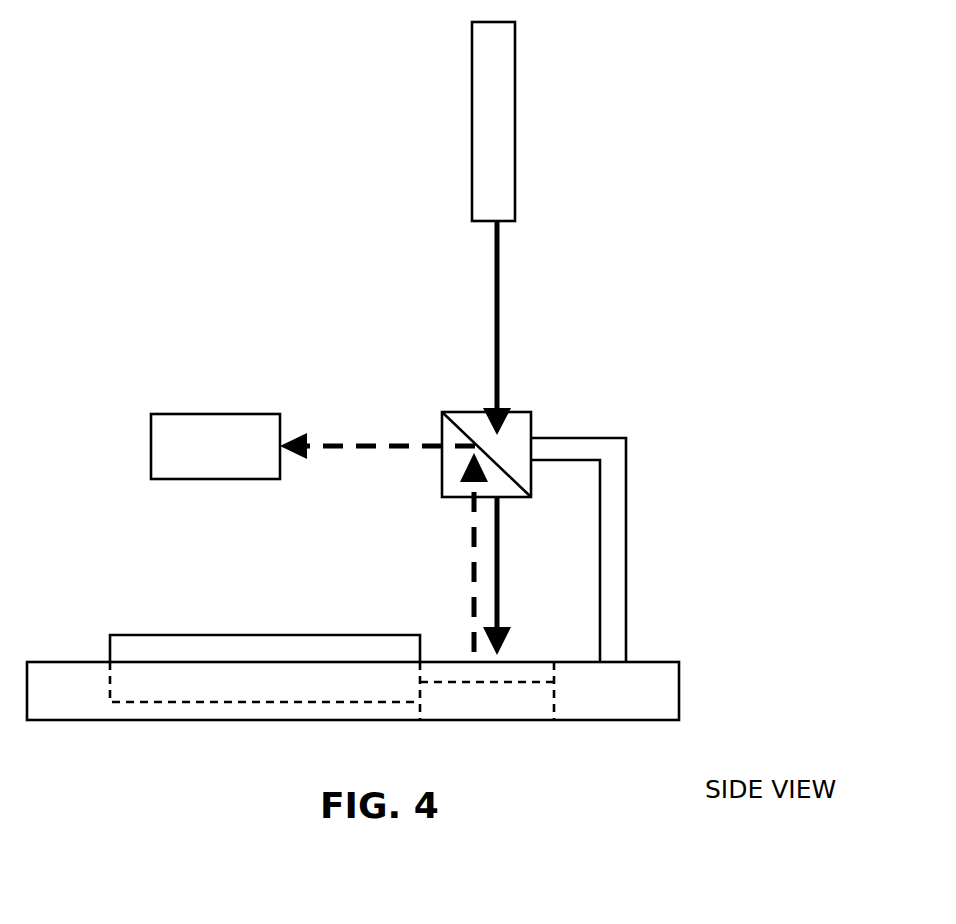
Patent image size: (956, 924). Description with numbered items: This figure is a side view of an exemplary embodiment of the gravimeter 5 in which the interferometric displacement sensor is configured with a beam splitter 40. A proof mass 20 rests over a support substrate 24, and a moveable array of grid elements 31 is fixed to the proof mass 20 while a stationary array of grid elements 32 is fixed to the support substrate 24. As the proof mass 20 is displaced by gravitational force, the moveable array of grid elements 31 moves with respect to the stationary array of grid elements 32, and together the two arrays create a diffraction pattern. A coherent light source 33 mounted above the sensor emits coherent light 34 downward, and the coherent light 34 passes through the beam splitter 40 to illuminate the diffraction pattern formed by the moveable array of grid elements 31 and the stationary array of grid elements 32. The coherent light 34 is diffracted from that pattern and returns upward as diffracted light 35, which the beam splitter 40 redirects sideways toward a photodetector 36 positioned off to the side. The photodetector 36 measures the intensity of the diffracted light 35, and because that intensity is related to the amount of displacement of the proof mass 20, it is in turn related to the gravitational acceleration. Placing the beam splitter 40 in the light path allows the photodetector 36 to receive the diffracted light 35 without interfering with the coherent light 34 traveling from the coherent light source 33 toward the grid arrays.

The gravimeter 5 is at (680, 209).
The proof mass 20 is at (187, 640).
The support substrate 24 is at (679, 680).
The moveable array of grid elements 31 is at (455, 668).
The stationary array of grid elements 32 is at (533, 668).
The coherent light source 33 is at (473, 125).
The coherent light 34 is at (493, 310).
The diffracted light 35 is at (473, 567).
The photodetector 36 is at (212, 413).
The beam splitter 40 is at (533, 423).